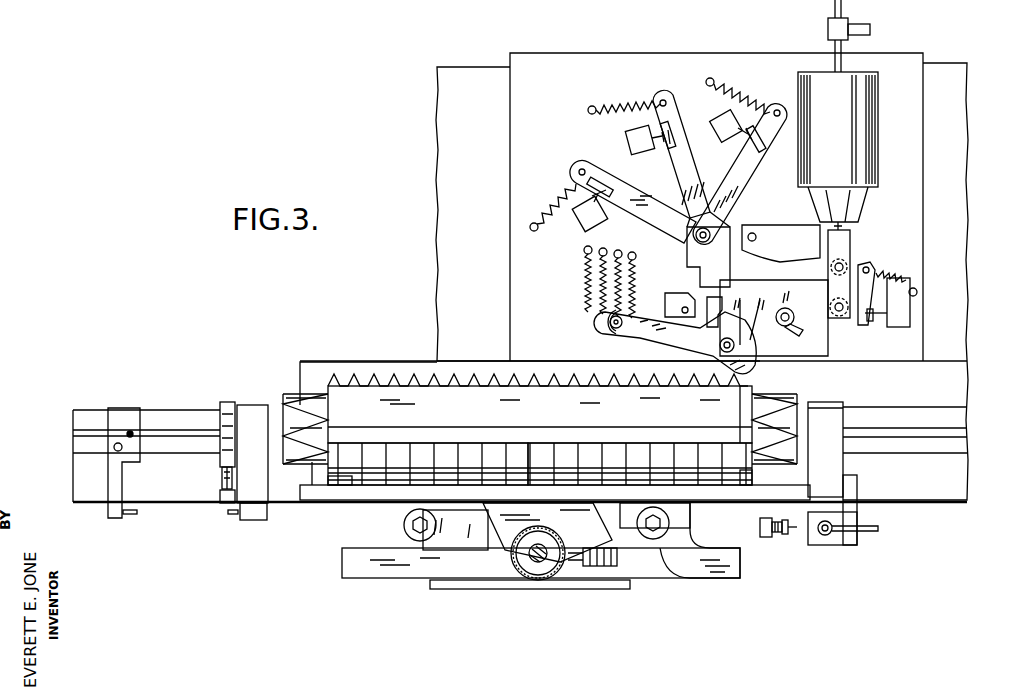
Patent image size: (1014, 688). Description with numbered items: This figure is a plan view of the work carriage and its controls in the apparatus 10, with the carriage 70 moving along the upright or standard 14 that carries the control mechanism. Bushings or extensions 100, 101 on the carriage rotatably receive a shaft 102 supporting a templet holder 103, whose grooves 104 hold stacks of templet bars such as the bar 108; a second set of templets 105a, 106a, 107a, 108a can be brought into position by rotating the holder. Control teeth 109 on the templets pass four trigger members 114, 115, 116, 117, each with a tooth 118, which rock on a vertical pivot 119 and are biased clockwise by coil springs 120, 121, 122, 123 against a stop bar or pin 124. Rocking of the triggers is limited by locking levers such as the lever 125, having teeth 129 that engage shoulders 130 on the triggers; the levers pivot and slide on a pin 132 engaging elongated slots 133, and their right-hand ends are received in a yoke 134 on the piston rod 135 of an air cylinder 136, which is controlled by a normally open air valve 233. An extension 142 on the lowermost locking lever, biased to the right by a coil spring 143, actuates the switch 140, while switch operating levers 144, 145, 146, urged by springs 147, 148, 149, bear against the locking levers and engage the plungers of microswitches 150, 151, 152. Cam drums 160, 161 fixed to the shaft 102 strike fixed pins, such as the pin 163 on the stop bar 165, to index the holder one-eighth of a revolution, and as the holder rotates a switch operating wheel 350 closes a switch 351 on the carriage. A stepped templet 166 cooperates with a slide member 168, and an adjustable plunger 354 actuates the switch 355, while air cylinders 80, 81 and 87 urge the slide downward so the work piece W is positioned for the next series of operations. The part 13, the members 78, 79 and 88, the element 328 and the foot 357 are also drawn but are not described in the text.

The housing 10 is at (967, 232).
The upright 14 is at (918, 187).
The air valve 233 is at (828, 22).
The air cylinder 136 is at (878, 108).
The piston rod 135 is at (845, 226).
The yoke 134 is at (850, 248).
The locking lever 125 is at (780, 290).
The switch operating lever 144 is at (752, 178).
The switch operating lever 145 is at (692, 152).
The switch operating lever 146 is at (648, 196).
The spring 148 is at (622, 100).
The spring 147 is at (760, 97).
The spring 149 is at (568, 183).
The microswitch 151 is at (630, 141).
The microswitch 150 is at (716, 118).
The microswitch 152 is at (600, 227).
The coil spring 122 is at (586, 275).
The coil spring 123 is at (590, 297).
The coil spring 121 is at (624, 292).
The coil spring 120 is at (634, 274).
The stop bar 124 is at (665, 302).
The trigger member 114 is at (625, 340).
The trigger member 115 is at (598, 331).
The trigger member 116 is at (600, 321).
The trigger member 117 is at (606, 316).
The tooth 129 is at (720, 343).
The shoulder 130 is at (722, 318).
The pivot 119 is at (744, 342).
The elongated slot 133 is at (794, 320).
The pivot pin 132 is at (799, 334).
The extension 142 is at (862, 325).
The coil spring 143 is at (905, 278).
The switch 140 is at (910, 319).
The control teeth 109 is at (345, 358).
The templet holder 103 is at (390, 350).
The templet bar 108 is at (457, 380).
The templet bar 106a is at (492, 456).
The templet bar 107a is at (637, 456).
The groove 104 is at (583, 445).
The tooth 118 is at (745, 378).
The templet bar 105a is at (345, 487).
The templet bar 108a is at (748, 470).
The cam drum 160 is at (312, 464).
The carriage 70 is at (370, 498).
The shaft 102 is at (282, 404).
The cam drum 161 is at (786, 396).
The bushing 101 is at (253, 405).
The foot 357 is at (255, 521).
The index plate 328 is at (217, 388).
The switch operating wheel 350 is at (221, 462).
The switch 351 is at (224, 500).
The stop bar 165 is at (110, 481).
The fixed pin 163 is at (113, 448).
The carriage assembly 13 is at (136, 384).
The bushing 100 is at (830, 402).
The switch 355 is at (830, 546).
The adjustable plunger 354 is at (792, 538).
The air cylinder 80 is at (406, 531).
The roller 78 is at (420, 541).
The air cylinder 81 is at (668, 523).
The air cylinder 87 is at (538, 581).
The roller 79 is at (653, 540).
The base plate 88 is at (363, 579).
The work piece W is at (478, 590).
The stepped templet bar 166 is at (610, 568).
The slide member 168 is at (686, 562).